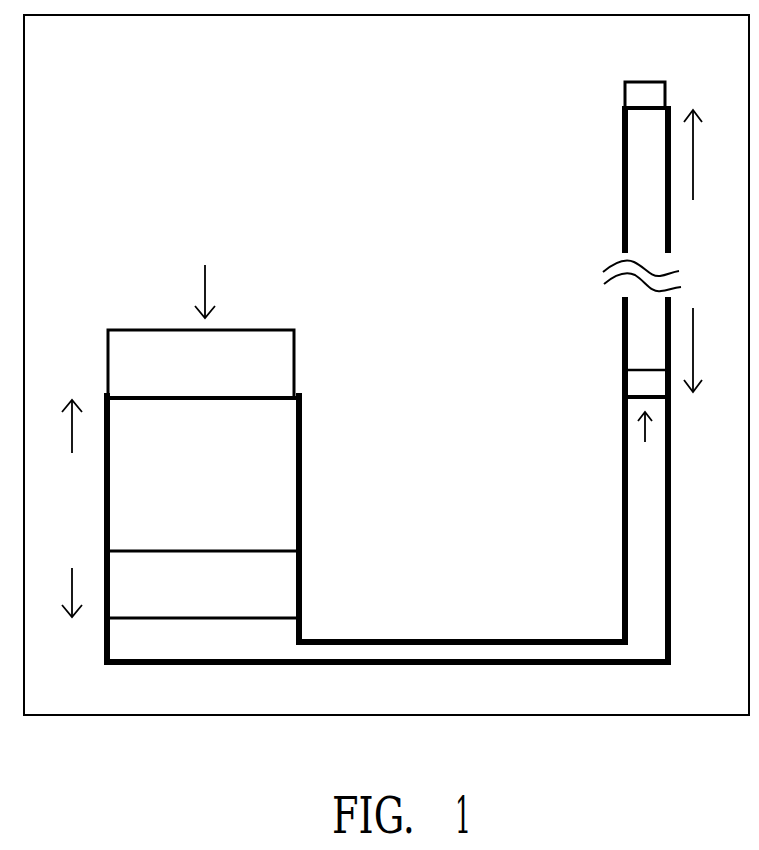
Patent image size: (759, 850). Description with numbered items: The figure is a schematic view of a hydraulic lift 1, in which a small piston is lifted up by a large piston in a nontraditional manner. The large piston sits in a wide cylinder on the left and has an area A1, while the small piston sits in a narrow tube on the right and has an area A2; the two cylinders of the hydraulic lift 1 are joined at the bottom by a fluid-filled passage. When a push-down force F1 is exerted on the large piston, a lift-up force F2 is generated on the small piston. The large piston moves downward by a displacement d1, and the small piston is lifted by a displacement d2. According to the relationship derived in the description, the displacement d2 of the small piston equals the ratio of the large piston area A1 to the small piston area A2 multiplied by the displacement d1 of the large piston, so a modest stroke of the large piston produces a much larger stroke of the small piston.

The hydraulic system 1 is at (384, 351).
The area of the large piston A1 is at (203, 415).
The area of the small piston A2 is at (640, 118).
The push-down force F1 is at (209, 221).
The lift-up force F2 is at (651, 445).
The displacement of the large piston d1 is at (74, 508).
The displacement of the small piston d2 is at (695, 251).